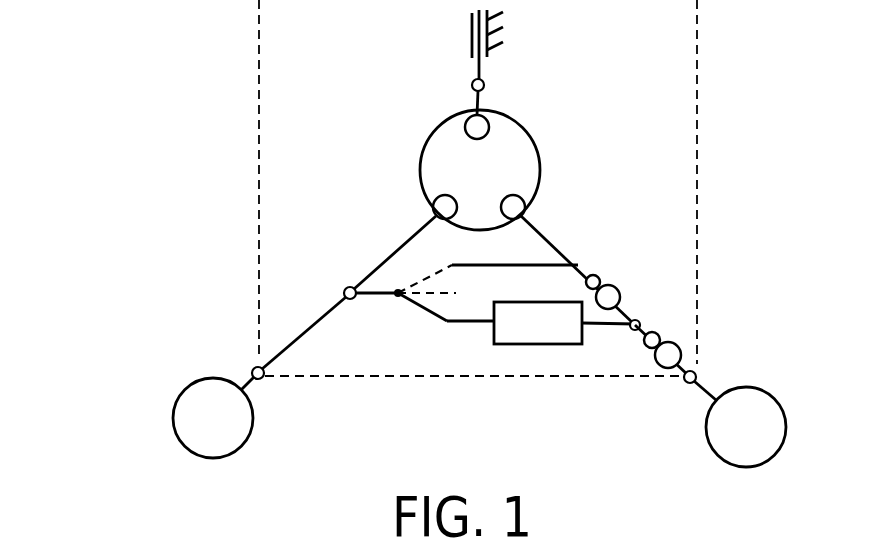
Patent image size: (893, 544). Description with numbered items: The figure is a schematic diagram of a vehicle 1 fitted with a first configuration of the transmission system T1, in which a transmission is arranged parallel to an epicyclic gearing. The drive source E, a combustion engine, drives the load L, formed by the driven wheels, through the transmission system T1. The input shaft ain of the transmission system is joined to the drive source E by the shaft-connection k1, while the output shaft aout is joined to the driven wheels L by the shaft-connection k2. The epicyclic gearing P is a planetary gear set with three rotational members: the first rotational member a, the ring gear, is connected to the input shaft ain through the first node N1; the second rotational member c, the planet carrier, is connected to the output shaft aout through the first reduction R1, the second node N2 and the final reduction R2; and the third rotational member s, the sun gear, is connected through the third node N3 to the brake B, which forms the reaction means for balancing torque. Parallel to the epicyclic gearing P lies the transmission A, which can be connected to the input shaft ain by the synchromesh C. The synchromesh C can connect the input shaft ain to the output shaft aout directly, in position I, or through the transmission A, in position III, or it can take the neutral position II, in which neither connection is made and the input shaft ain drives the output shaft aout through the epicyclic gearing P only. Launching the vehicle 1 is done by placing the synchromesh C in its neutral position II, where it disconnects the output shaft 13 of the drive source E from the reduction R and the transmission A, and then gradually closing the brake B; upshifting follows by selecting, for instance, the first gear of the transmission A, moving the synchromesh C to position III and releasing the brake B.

The vehicle 1 is at (138, 115).
The transmission system T1 is at (253, 140).
The brake B is at (501, 34).
The third node N3 is at (474, 81).
The third rotational member s is at (470, 121).
The epicyclic gearing P is at (480, 170).
The first rotational member a is at (445, 207).
The second rotational member c is at (513, 207).
The first node N1 is at (355, 299).
The synchromesh C is at (421, 306).
The position I is at (425, 266).
The reduction R is at (497, 264).
The neutral position II is at (437, 293).
The position III is at (446, 322).
The transmission A is at (564, 323).
The first reduction R1 is at (603, 278).
The second node N2 is at (632, 330).
The final reduction R2 is at (660, 335).
The shaft-connection k1 is at (253, 369).
The input shaft ain is at (288, 348).
The output shaft of the drive source 13 is at (242, 382).
The drive source E is at (213, 418).
The shaft-connection k2 is at (695, 374).
The output shaft aout is at (683, 371).
The load L is at (746, 427).